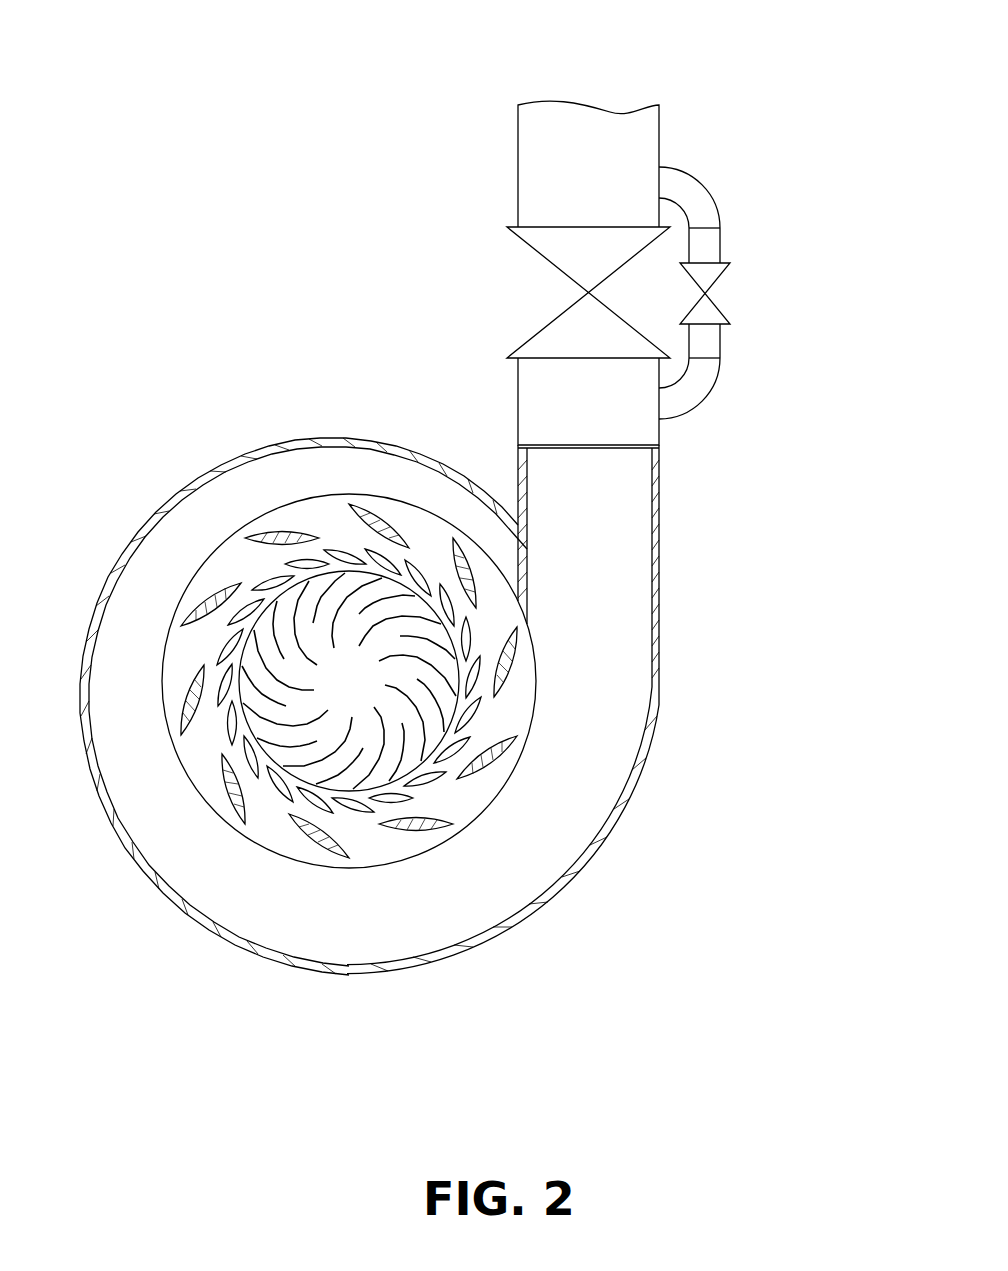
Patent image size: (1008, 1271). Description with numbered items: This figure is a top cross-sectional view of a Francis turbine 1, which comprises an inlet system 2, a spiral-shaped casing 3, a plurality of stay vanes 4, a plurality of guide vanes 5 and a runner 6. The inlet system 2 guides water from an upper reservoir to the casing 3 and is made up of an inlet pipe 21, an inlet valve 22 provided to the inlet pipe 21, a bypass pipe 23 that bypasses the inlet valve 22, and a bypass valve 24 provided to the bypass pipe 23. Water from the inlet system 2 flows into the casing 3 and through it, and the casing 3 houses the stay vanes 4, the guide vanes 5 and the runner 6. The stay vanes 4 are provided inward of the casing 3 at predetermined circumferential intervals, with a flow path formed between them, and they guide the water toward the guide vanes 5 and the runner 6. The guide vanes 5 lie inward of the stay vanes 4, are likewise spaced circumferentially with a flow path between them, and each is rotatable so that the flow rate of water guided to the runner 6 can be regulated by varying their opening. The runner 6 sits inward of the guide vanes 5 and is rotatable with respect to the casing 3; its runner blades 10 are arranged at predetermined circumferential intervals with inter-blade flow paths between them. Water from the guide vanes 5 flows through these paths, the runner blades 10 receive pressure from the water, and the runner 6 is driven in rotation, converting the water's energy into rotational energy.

The Francis turbine 1 is at (752, 67).
The inlet system 2 is at (662, 117).
The inlet pipe 21 is at (645, 150).
The inlet valve 22 is at (548, 245).
The bypass pipe 23 is at (707, 210).
The bypass valve 24 is at (707, 277).
The casing 3 is at (655, 737).
The stay vanes 4 is at (500, 747).
The guide vanes 5 is at (355, 798).
The runner 6 is at (317, 785).
The runner blades 10 is at (283, 750).